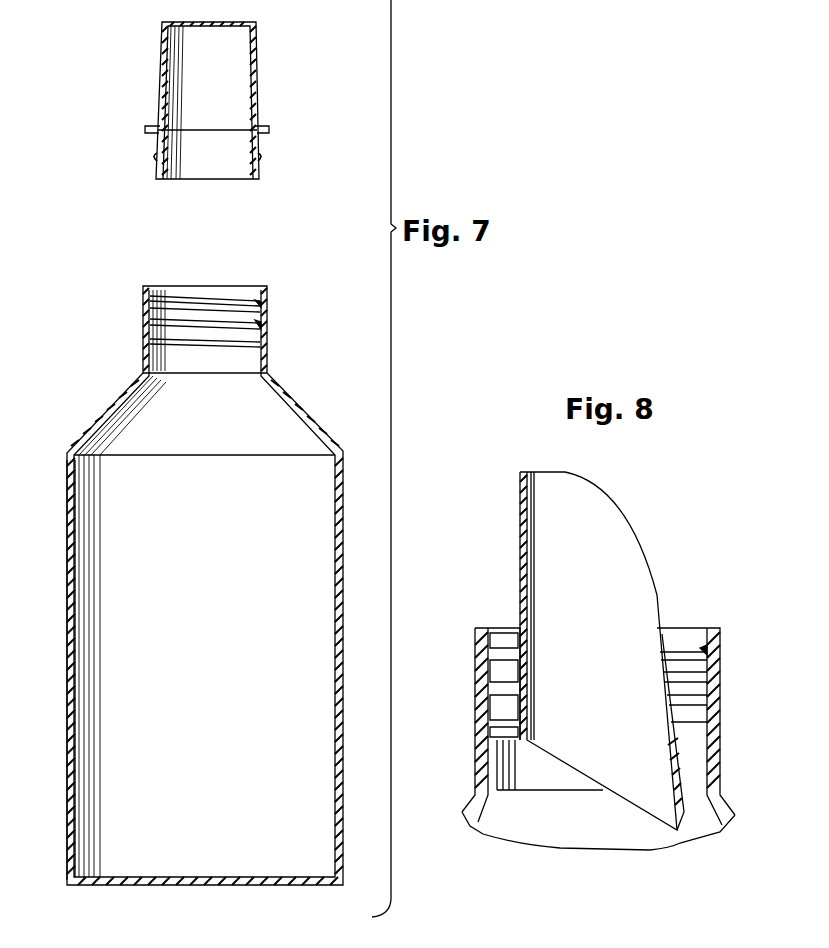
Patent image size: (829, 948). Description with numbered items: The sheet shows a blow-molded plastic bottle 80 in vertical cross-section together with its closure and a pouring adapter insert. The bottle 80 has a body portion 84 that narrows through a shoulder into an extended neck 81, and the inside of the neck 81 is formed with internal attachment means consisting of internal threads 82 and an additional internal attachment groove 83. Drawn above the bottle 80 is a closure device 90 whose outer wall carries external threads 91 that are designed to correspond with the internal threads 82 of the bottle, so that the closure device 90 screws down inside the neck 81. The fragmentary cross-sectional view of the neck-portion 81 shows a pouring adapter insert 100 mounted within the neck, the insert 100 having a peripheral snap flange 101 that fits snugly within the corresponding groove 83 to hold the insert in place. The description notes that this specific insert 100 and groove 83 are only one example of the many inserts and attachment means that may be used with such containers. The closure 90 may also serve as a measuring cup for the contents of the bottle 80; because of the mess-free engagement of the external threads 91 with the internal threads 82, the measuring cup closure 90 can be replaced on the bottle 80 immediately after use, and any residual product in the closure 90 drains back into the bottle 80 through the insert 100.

In FIG. 7, the plastic bottle 80 is at (89, 398).
In FIG. 7, the extended neck 81 is at (264, 326).
In FIG. 8, the extended neck 81 is at (712, 683).
In FIG. 7, the internal threads 82 is at (262, 301).
In FIG. 8, the internal threads 82 is at (690, 644).
In FIG. 7, the internal attachment groove 83 is at (262, 348).
In FIG. 8, the internal attachment groove 83 is at (703, 722).
In FIG. 7, the body portion 84 is at (68, 497).
In FIG. 7, the closure device 90 is at (265, 76).
In FIG. 7, the external threads 91 is at (262, 160).
In FIG. 8, the pouring adapter insert 100 is at (651, 506).
In FIG. 8, the peripheral snap flange 101 is at (500, 737).